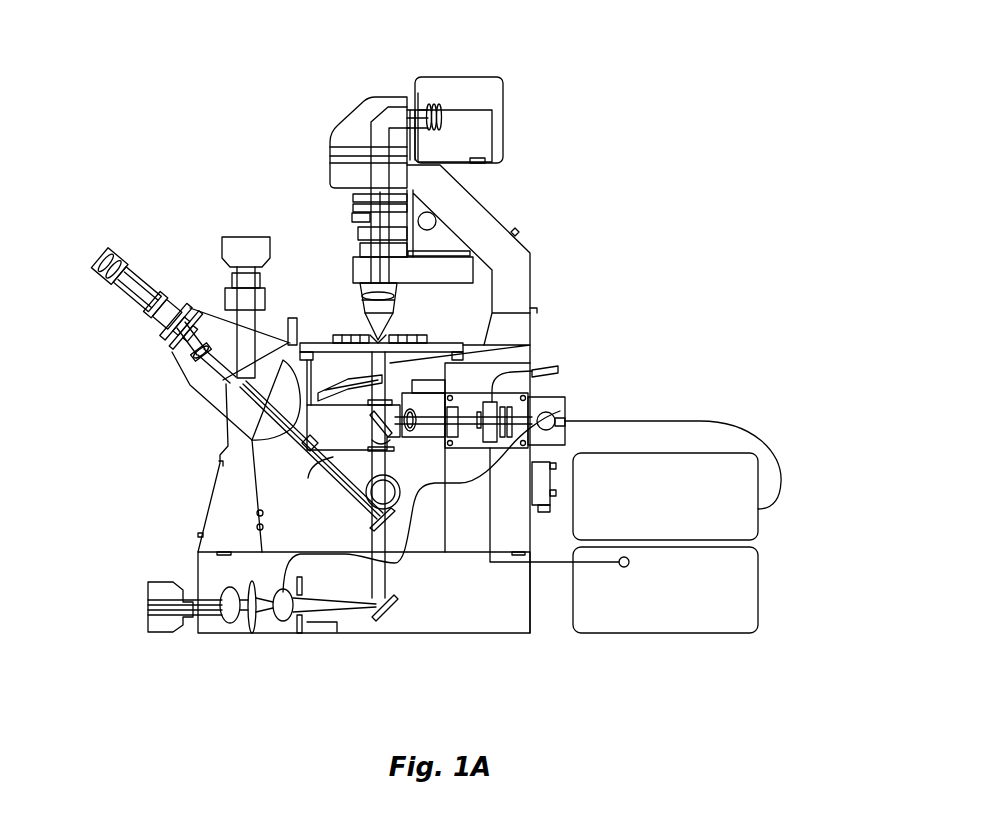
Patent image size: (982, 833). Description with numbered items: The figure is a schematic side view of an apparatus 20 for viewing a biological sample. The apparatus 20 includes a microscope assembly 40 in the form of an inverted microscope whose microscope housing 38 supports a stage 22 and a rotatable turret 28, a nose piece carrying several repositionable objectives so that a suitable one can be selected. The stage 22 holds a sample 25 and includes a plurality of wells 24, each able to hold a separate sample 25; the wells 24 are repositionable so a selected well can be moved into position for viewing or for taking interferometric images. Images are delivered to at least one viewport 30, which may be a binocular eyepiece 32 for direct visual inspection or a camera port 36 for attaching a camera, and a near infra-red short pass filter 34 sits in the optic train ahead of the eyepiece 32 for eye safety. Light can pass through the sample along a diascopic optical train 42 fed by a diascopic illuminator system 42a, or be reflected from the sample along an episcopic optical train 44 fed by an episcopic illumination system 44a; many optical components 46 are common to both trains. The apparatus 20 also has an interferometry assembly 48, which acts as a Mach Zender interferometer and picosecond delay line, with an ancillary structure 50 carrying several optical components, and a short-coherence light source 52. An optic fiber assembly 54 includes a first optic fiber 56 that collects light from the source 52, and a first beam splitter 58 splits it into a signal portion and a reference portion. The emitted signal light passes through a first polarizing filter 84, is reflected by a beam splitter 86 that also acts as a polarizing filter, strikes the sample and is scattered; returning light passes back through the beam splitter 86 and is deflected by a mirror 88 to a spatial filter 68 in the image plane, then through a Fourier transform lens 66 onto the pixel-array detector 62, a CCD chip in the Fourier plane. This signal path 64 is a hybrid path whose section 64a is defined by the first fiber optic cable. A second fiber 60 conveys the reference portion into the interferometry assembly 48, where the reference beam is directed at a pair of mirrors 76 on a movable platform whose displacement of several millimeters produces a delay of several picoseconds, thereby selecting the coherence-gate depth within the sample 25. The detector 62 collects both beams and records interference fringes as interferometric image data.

The apparatus 20 is at (240, 150).
The stage 22 is at (339, 334).
The wells 24 is at (408, 335).
The sample 25 is at (374, 335).
The rotatable turret 28 is at (332, 377).
The viewport 30 is at (162, 341).
The eyepiece 32 is at (104, 270).
The near infra-red short pass filter 34 is at (186, 350).
The camera port 36 is at (222, 287).
The microscope housing 38 is at (213, 497).
The microscope assembly 40 is at (546, 252).
The diascopic optical train 42 is at (354, 250).
The diascopic illuminator system 42a is at (463, 77).
The episcopic optical train 44 is at (531, 345).
The episcopic illumination system 44a is at (759, 590).
The optical components 46 is at (205, 338).
The interferometry assembly 48 is at (500, 635).
The ancillary structure 50 is at (218, 636).
The short-coherence light source 52 is at (759, 511).
The optic fiber assembly 54 is at (627, 419).
The first optic fiber 56 is at (753, 427).
The first beam splitter 58 is at (565, 410).
The second fiber 60 is at (457, 488).
The pixel-array detector 62 is at (155, 635).
The signal path 64 is at (385, 577).
The fiber optic section of signal path 64a is at (718, 420).
The Fourier transform lens 66 is at (250, 633).
The spatial filter 68 is at (304, 587).
The mirrors 76 is at (228, 596).
The first polarizing filter 84 is at (559, 371).
The beam splitter 86 is at (366, 422).
The mirror 88 is at (382, 611).